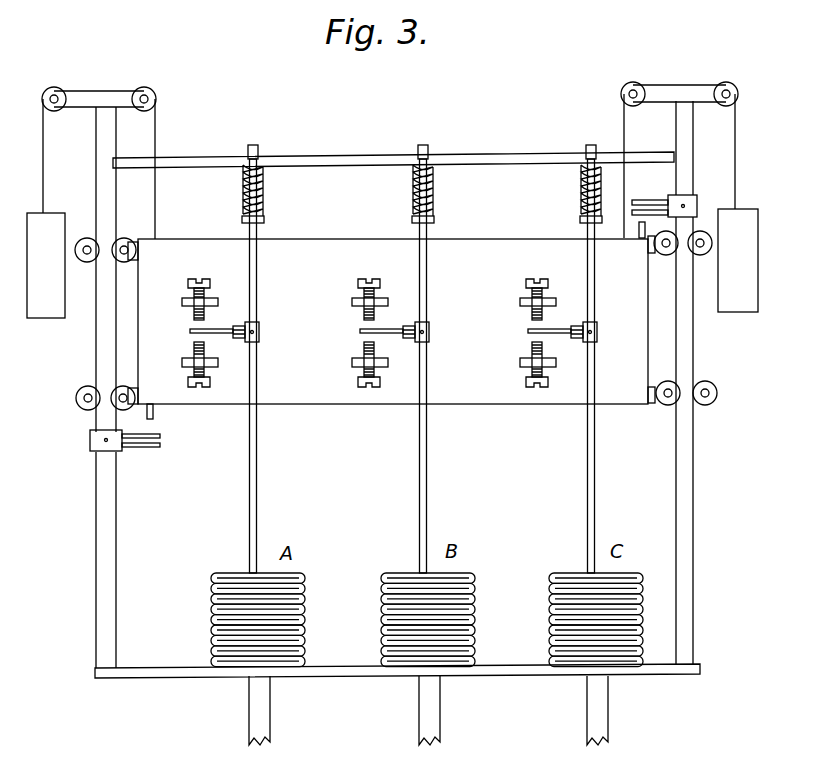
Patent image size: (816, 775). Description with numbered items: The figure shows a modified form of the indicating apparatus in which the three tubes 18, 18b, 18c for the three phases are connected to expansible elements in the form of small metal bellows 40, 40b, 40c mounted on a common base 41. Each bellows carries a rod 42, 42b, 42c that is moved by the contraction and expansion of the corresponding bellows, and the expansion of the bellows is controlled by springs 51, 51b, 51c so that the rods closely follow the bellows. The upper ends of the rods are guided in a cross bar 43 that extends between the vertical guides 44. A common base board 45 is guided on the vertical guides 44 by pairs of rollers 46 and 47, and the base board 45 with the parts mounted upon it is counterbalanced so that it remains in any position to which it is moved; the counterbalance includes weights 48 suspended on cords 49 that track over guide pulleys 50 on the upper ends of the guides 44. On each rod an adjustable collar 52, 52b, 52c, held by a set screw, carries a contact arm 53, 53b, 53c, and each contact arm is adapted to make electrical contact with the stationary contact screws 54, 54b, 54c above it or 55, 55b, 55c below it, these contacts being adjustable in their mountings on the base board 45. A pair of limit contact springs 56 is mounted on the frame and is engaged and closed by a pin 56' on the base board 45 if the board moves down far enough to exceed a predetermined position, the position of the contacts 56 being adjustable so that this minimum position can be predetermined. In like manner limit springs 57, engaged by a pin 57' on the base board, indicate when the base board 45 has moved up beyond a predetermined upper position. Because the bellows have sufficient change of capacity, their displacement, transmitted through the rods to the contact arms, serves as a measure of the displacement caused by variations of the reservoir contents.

The tube 18 is at (250, 726).
The tube 18b is at (418, 720).
The tube 18c is at (590, 708).
The bellows 40 is at (212, 613).
The bellows 40b is at (384, 621).
The bellows 40c is at (551, 630).
The common base 41 is at (158, 674).
The rod 42 is at (258, 461).
The rod 42b is at (428, 458).
The rod 42c is at (597, 449).
The cross bar 43 is at (355, 158).
The vertical guide 44 is at (108, 359).
The base board 45 is at (354, 404).
The roller 46 is at (96, 246).
The roller 47 is at (86, 401).
The weight 48 is at (38, 318).
The cord 49 is at (44, 154).
The guide pulley 50 is at (150, 88).
The spring 51 is at (264, 208).
The spring 51b is at (435, 206).
The spring 51c is at (580, 199).
The adjustable collar 52 is at (260, 331).
The adjustable collar 52b is at (429, 328).
The adjustable collar 52c is at (600, 329).
The contact arm 53 is at (190, 332).
The contact arm 53b is at (362, 331).
The contact arm 53c is at (530, 331).
The stationary contact screw 54 is at (192, 306).
The stationary contact screw 54b is at (362, 310).
The stationary contact screw 54c is at (538, 312).
The stationary contact screw 55 is at (190, 362).
The stationary contact screw 55b is at (358, 362).
The stationary contact screw 55c is at (526, 362).
The limit contact spring 56 is at (142, 447).
The pin 56' is at (174, 416).
The limit spring 57 is at (664, 197).
The pin 57' is at (630, 246).